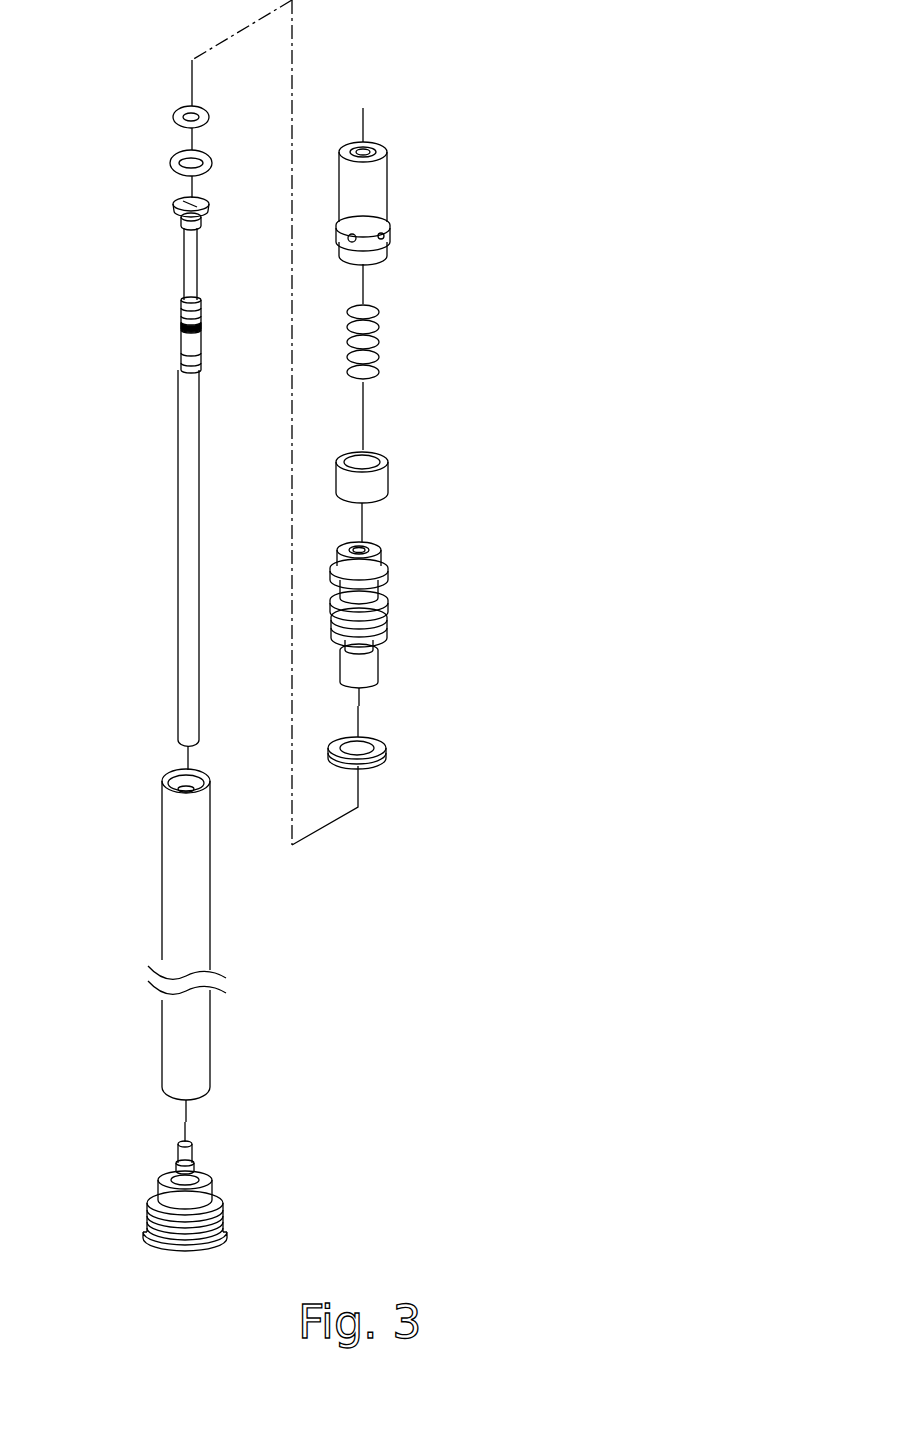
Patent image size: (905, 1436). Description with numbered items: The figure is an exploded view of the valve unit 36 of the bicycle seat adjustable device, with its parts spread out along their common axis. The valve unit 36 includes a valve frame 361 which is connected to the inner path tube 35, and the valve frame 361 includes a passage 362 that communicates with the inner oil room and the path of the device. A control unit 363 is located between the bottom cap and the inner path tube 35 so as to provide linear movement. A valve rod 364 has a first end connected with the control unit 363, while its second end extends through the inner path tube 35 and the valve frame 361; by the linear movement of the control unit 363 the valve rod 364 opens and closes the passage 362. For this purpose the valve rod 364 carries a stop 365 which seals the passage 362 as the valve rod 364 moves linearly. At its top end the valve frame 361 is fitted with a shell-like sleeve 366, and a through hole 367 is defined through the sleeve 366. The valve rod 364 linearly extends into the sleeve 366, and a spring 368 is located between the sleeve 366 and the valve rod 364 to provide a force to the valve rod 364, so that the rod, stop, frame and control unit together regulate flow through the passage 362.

The valve unit 36 is at (578, 138).
The inner path tube 35 is at (158, 911).
The valve frame 361 is at (377, 595).
The passage 362 is at (378, 640).
The control unit 363 is at (177, 1155).
The valve rod 364 is at (186, 410).
The stop 365 is at (173, 204).
The shell-like sleeve 366 is at (380, 186).
The through hole 367 is at (392, 238).
The spring 368 is at (378, 321).